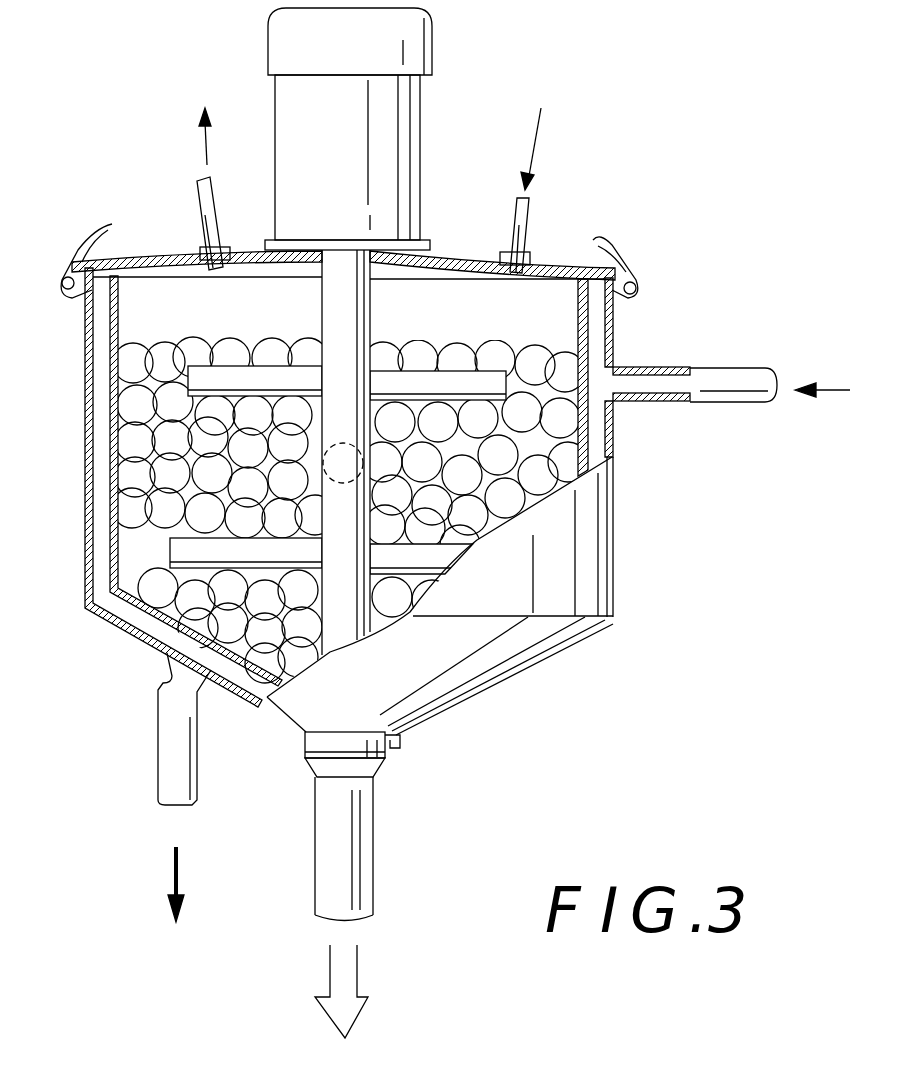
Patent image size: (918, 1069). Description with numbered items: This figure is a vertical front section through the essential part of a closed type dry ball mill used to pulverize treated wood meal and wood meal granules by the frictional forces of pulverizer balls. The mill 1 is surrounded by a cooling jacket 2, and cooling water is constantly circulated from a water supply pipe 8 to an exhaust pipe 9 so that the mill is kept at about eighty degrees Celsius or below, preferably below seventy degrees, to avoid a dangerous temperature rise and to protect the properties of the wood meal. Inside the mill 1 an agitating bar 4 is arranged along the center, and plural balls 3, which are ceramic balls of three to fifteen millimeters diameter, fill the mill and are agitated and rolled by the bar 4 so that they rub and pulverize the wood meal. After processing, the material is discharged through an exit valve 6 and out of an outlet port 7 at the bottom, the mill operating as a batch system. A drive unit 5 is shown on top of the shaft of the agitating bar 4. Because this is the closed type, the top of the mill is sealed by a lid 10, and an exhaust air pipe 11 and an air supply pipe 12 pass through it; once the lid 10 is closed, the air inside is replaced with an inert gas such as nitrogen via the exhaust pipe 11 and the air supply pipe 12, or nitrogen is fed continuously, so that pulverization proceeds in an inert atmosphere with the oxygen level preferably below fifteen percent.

The mill 1 is at (133, 323).
The cooling jacket 2 is at (87, 440).
The balls 3 is at (128, 522).
The agitating bar 4 is at (371, 328).
The motor 5 is at (290, 42).
The exit valve 6 is at (401, 746).
The outlet port 7 is at (350, 842).
The water supply pipe 8 is at (670, 400).
The exhaust pipe 9 is at (167, 755).
The lid 10 is at (457, 250).
The exhaust air pipe 11 is at (204, 196).
The air supply pipe 12 is at (533, 218).